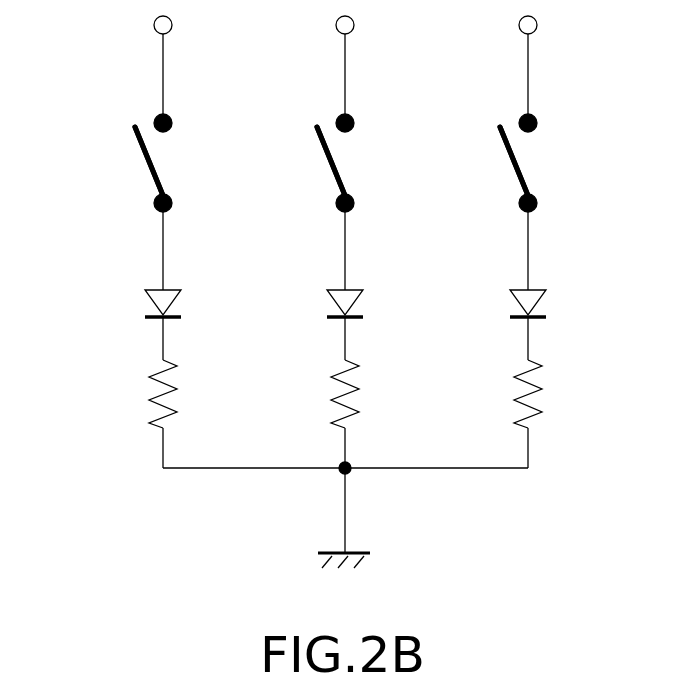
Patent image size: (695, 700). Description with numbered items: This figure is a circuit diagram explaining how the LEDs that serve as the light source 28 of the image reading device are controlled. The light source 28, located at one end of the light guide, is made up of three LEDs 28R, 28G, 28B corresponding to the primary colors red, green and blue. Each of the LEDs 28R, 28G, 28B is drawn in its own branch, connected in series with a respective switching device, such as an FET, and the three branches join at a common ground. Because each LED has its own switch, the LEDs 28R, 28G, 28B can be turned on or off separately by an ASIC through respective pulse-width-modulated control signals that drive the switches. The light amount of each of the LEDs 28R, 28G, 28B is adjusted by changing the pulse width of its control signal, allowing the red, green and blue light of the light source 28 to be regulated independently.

The light source 28 is at (330, 292).
The LED 28R is at (148, 300).
The LED 28G is at (331, 300).
The LED 28B is at (514, 300).